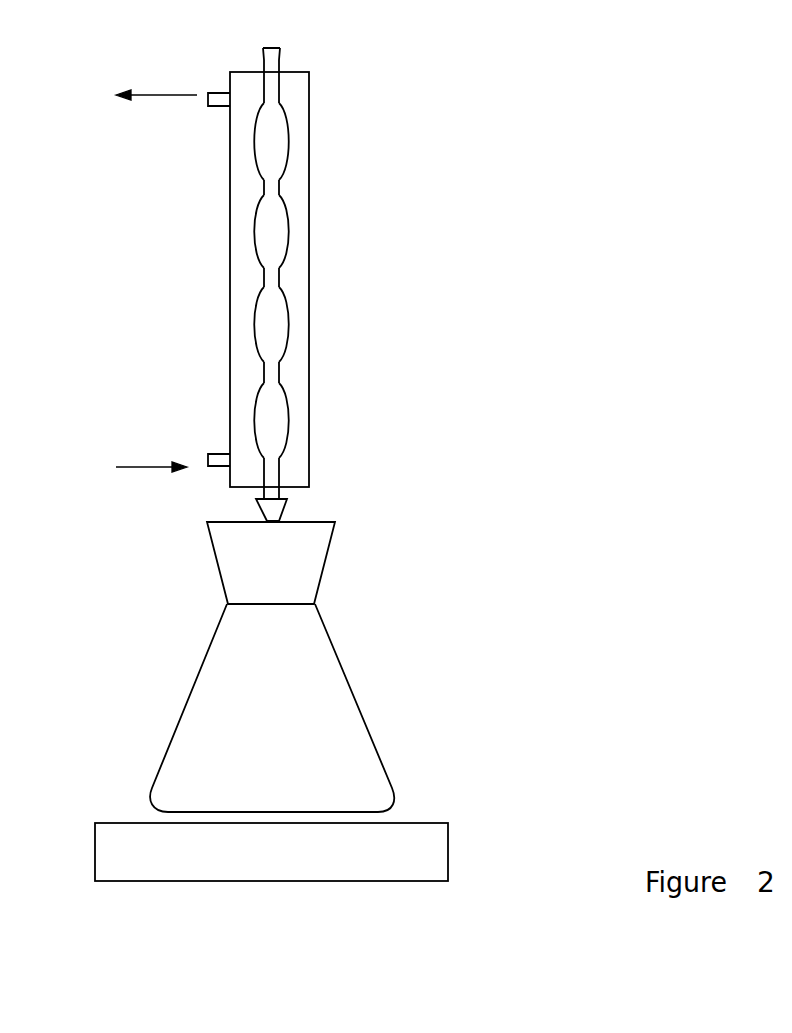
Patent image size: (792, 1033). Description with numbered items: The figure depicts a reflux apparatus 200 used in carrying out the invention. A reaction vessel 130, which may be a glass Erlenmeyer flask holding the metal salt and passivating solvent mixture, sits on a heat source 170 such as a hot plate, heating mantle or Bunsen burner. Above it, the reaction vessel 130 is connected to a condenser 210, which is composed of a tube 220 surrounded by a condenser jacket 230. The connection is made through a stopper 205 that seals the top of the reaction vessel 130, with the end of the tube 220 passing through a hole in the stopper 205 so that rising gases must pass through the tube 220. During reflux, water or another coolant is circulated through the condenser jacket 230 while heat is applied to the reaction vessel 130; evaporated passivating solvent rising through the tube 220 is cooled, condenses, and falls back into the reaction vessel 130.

The reflux apparatus 200 is at (504, 131).
The condenser 210 is at (355, 269).
The tube 220 is at (286, 50).
The condenser jacket 230 is at (322, 407).
The stopper 205 is at (343, 533).
The reaction vessel 130 is at (379, 730).
The heat source 170 is at (448, 843).